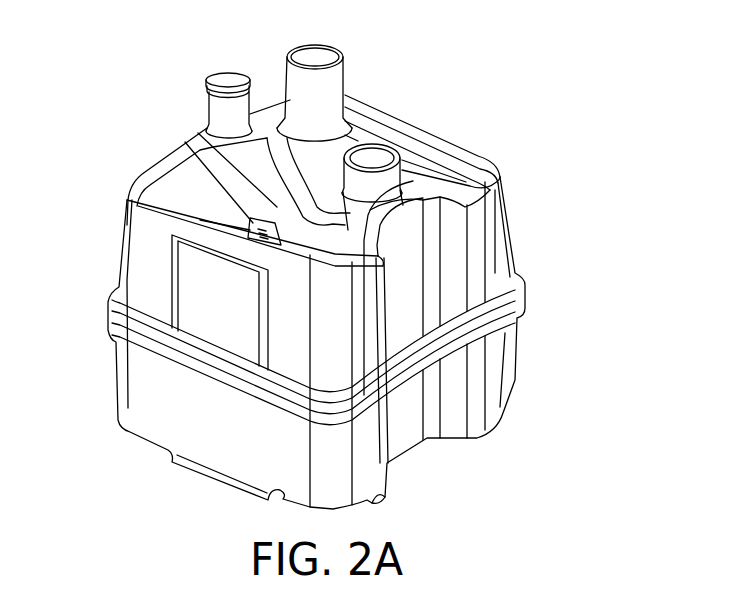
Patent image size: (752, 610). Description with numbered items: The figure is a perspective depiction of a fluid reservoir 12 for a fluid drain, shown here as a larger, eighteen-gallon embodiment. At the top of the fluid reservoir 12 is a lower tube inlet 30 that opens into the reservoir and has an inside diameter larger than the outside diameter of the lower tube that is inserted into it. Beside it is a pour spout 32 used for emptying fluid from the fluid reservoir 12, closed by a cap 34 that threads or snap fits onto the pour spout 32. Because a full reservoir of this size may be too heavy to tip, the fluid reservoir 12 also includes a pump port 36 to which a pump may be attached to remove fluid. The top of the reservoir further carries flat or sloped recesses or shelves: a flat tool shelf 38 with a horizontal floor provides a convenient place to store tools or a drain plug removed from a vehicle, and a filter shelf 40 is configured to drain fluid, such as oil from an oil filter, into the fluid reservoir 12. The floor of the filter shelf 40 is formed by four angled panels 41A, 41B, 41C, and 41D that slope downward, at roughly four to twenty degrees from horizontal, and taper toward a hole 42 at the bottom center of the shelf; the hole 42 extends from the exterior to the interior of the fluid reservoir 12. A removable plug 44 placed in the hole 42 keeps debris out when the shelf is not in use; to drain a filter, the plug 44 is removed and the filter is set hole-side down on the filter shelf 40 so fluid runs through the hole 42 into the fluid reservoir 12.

The fluid reservoir 12 is at (95, 76).
The lower tube inlet 30 is at (340, 54).
The pour spout 32 is at (213, 123).
The cap 34 is at (223, 82).
The pump port 36 is at (368, 145).
The flat tool shelf 38 is at (410, 139).
The filter shelf 40 is at (140, 174).
The angled panel 41A is at (247, 235).
The angled panel 41B is at (310, 250).
The angled panel 41C is at (207, 133).
The angled panel 41D is at (176, 195).
The hole 42 is at (257, 238).
The plug 44 is at (233, 216).